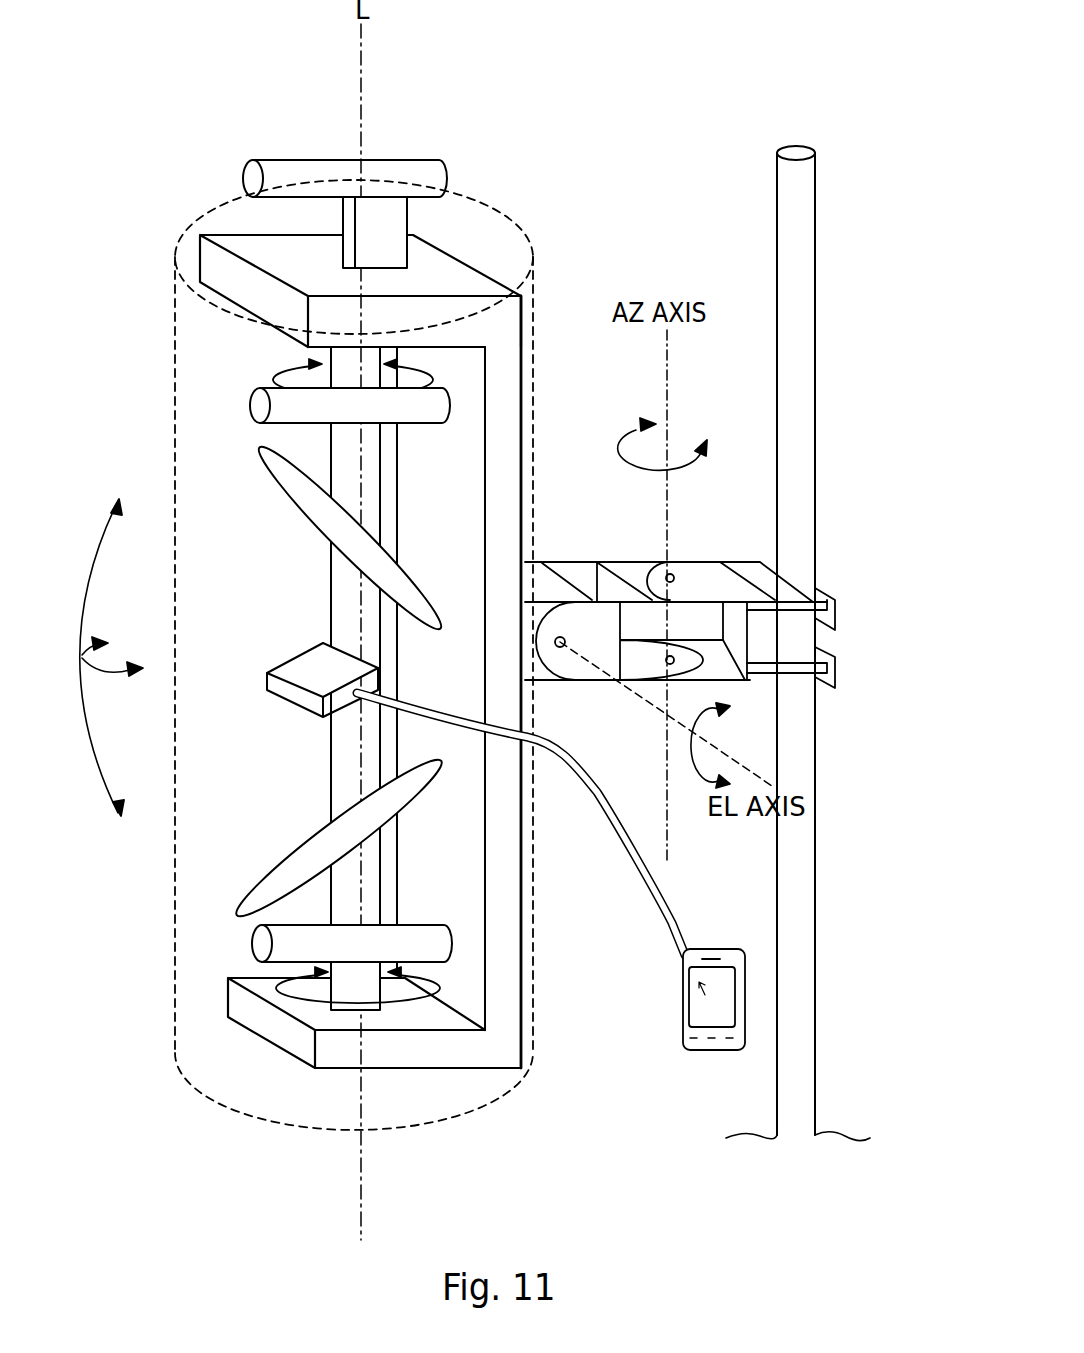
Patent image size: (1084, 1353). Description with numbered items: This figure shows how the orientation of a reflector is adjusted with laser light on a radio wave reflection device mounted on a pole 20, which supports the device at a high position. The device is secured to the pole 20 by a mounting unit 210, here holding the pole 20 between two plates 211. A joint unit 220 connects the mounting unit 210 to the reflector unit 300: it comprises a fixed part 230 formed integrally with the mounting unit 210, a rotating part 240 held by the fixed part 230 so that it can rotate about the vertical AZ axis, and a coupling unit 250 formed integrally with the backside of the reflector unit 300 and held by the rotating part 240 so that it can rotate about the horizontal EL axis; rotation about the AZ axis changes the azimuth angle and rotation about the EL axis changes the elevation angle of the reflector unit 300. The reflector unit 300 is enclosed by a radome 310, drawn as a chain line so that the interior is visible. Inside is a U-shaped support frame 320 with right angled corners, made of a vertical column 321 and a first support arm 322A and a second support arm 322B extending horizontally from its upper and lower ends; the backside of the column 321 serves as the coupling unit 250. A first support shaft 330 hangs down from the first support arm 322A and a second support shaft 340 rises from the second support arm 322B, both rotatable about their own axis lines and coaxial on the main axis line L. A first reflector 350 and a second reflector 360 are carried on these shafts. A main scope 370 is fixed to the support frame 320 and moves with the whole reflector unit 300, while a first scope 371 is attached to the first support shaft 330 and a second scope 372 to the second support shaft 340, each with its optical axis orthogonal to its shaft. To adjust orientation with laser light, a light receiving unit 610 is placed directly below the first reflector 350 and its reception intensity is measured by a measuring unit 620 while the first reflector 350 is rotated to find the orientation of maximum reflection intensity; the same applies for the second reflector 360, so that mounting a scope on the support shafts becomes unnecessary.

The pole 20 is at (802, 223).
The mounting unit 210 is at (837, 573).
The plates 211 is at (790, 580).
The joint unit 220 is at (705, 528).
The fixed part 230 is at (750, 674).
The rotating part 240 is at (596, 680).
The coupling unit 250 is at (540, 562).
The reflector unit 300 is at (183, 182).
The radome 310 is at (510, 1092).
The support frame 320 is at (460, 782).
The column 321 is at (507, 437).
The first support arm 322A is at (248, 252).
The second support arm 322B is at (348, 1055).
The first support shaft 330 is at (315, 362).
The second support shaft 340 is at (347, 985).
The first reflector 350 is at (313, 502).
The second reflector 360 is at (278, 885).
The main scope 370 is at (430, 167).
The first scope 371 is at (290, 405).
The second scope 372 is at (280, 942).
The light receiving unit 610 is at (310, 668).
The measuring unit 620 is at (686, 1042).